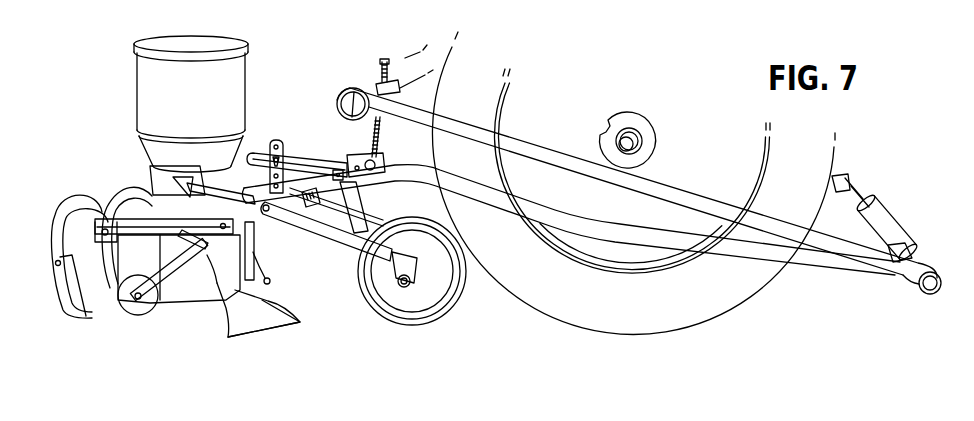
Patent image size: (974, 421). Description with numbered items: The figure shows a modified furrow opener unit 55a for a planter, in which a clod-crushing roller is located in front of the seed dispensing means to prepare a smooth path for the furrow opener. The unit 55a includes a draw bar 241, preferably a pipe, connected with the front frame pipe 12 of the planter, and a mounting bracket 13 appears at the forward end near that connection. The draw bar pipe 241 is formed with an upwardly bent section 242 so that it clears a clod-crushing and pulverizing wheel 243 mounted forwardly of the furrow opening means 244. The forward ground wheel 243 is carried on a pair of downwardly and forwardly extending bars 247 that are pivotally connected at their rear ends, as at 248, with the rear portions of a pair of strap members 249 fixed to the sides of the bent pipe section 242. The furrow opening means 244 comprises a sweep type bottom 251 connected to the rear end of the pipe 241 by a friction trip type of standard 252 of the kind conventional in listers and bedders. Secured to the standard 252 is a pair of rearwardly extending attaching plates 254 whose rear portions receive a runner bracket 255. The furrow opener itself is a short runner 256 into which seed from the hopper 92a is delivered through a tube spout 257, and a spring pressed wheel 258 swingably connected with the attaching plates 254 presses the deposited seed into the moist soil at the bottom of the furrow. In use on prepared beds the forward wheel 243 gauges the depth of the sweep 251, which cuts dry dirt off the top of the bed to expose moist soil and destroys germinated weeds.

The hopper 92a is at (135, 100).
The toolbar mounting bracket 13 is at (403, 62).
The strap members 249 is at (298, 193).
The pivotal connection 248 is at (268, 199).
The upwardly bent section 242 is at (443, 171).
The furrow opener unit 55a is at (597, 225).
The draw bar 241 is at (527, 224).
The front frame pipe 12 is at (887, 223).
The clod-crushing and pulverizing wheel 243 is at (412, 322).
The downwardly and forwardly extending bars 247 is at (326, 222).
The friction trip type of standard 252 is at (250, 254).
The attaching plates 254 is at (258, 268).
The sweep type bottom 251 is at (277, 298).
The tube spout 257 is at (160, 246).
The spring pressed wheel 258 is at (128, 298).
The runner bracket 255 is at (172, 306).
The short runner 256 is at (192, 306).
The furrow opening means 244 is at (267, 324).